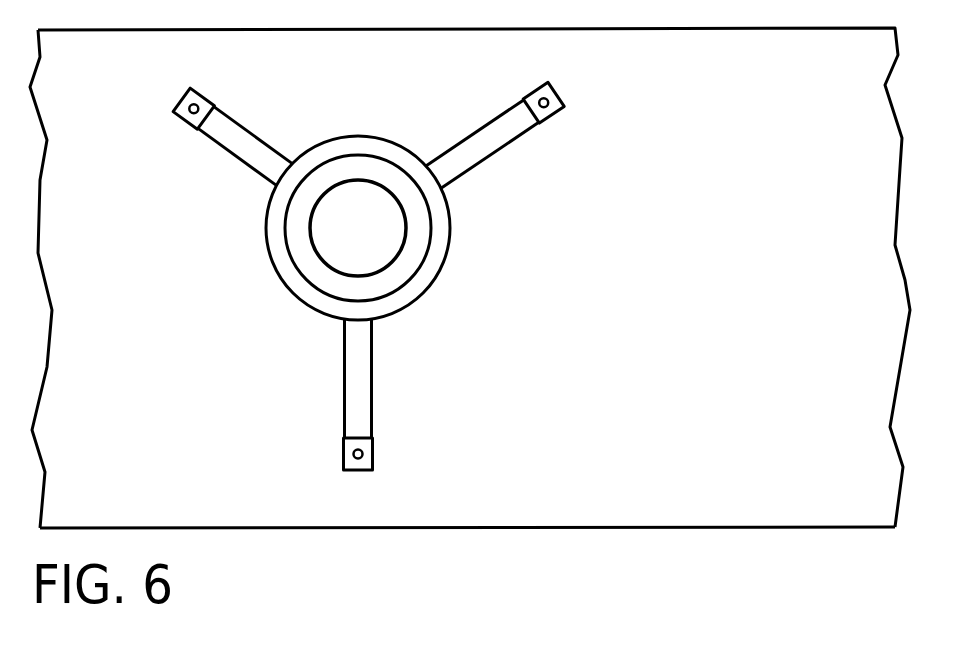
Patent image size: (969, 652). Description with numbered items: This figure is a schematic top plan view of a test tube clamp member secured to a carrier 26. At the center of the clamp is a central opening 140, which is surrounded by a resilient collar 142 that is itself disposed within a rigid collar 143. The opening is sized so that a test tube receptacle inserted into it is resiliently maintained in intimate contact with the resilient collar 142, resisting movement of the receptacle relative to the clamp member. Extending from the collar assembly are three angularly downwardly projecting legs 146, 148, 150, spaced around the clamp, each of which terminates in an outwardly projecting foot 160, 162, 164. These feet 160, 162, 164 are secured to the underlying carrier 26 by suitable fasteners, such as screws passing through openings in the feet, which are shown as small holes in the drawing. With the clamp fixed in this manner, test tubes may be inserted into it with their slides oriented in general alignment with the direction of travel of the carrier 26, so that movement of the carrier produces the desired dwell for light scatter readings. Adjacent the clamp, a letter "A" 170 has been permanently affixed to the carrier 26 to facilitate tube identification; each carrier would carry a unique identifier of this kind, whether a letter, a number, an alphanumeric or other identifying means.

The carrier 26 is at (745, 348).
The central opening 140 is at (335, 243).
The resilient collar 142 is at (415, 257).
The rigid collar 143 is at (370, 145).
The leg 146 is at (233, 138).
The leg 148 is at (362, 402).
The leg 150 is at (485, 157).
The foot 160 is at (182, 95).
The foot 162 is at (343, 448).
The foot 164 is at (562, 98).
The letter "A" 170 is at (578, 545).